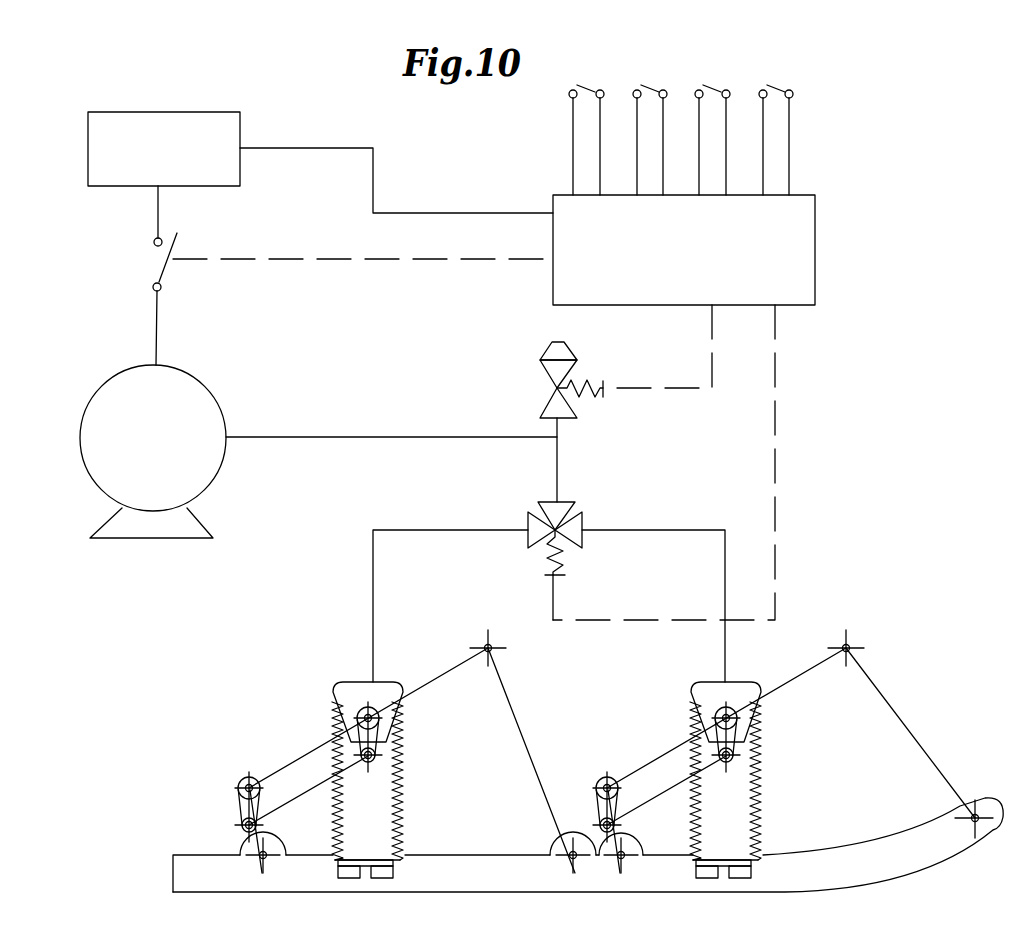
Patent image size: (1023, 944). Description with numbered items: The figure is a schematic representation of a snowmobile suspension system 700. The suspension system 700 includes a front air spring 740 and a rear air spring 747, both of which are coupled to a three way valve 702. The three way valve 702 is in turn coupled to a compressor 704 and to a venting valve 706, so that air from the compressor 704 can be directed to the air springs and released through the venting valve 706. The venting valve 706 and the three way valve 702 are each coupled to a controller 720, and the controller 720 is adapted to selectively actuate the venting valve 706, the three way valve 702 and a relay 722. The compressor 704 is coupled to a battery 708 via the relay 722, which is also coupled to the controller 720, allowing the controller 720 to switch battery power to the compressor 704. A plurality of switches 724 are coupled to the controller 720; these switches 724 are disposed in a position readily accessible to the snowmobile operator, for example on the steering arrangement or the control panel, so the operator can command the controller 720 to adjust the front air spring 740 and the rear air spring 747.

The suspension system 700 is at (867, 374).
The three way valve 702 is at (578, 522).
The compressor 704 is at (208, 408).
The venting valve 706 is at (553, 372).
The battery 708 is at (230, 129).
The controller 720 is at (807, 262).
The relay 722 is at (191, 243).
The switches 724 is at (652, 83).
The front air spring 740 is at (760, 784).
The rear air spring 747 is at (403, 781).